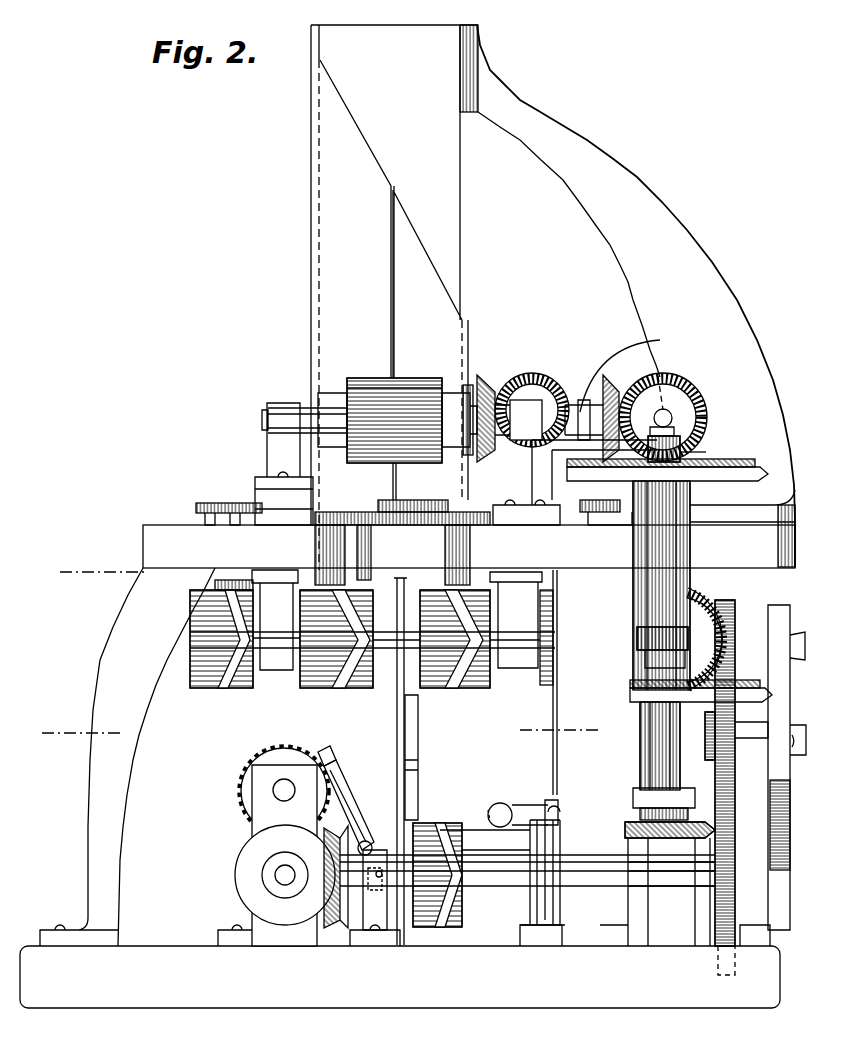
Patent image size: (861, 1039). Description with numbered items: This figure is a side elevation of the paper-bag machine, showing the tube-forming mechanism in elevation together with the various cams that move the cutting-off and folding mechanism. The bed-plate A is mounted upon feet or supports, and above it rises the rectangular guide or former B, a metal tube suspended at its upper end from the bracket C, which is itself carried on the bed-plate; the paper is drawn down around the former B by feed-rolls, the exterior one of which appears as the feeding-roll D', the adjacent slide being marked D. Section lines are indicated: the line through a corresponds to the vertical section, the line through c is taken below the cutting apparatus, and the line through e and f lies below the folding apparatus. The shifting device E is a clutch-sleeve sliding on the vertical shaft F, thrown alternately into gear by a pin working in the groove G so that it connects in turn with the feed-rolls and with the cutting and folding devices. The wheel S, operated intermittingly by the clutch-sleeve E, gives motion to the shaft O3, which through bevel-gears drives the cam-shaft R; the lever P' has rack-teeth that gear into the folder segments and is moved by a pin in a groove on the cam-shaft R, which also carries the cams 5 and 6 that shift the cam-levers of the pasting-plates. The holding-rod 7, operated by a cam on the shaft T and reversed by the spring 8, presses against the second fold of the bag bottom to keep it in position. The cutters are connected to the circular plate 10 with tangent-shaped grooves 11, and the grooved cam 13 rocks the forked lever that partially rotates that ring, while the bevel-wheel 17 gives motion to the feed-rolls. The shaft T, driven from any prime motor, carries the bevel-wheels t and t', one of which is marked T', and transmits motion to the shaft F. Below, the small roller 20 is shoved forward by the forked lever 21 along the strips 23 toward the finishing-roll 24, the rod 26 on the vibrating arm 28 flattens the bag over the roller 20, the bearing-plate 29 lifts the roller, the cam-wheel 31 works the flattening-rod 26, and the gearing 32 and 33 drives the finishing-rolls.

The cam 5 is at (240, 688).
The cam 6 is at (470, 686).
The holding-rod 7 is at (398, 698).
The spring 8 is at (420, 757).
The circular plate 10 is at (402, 520).
The tangent-shaped grooves 11 is at (258, 510).
The grooved cam 13 is at (632, 358).
The bevel-wheel 17 is at (706, 444).
The small roller 20 is at (494, 812).
The forked lever 21 is at (548, 804).
The strips 23 is at (494, 818).
The finishing-roll 24 is at (262, 758).
The rod 26 is at (336, 760).
The vibrating arm 28 is at (352, 816).
The bearing-plate 29 is at (390, 833).
The cam-wheel 31 is at (420, 880).
The gearing 32 is at (338, 877).
The gearing 33 is at (285, 855).
The bed-plate A is at (469, 546).
The rectangular guide or former B is at (394, 297).
The bracket C is at (636, 296).
The slide D is at (366, 284).
The feeding-roll D' is at (394, 428).
The shifting device E is at (668, 562).
The vertical shaft F is at (672, 724).
The groove G is at (645, 638).
The shaft O3 is at (672, 410).
The lever P' is at (397, 620).
The cam-shaft R is at (190, 630).
The wheel S is at (762, 682).
The shaft T is at (527, 872).
The bevel gear T' is at (670, 829).
The section line a is at (797, 583).
The section line c is at (93, 578).
The section line e is at (73, 735).
The section line f is at (568, 682).
The bevel-wheel t is at (669, 889).
The bevel-wheel t' is at (671, 888).